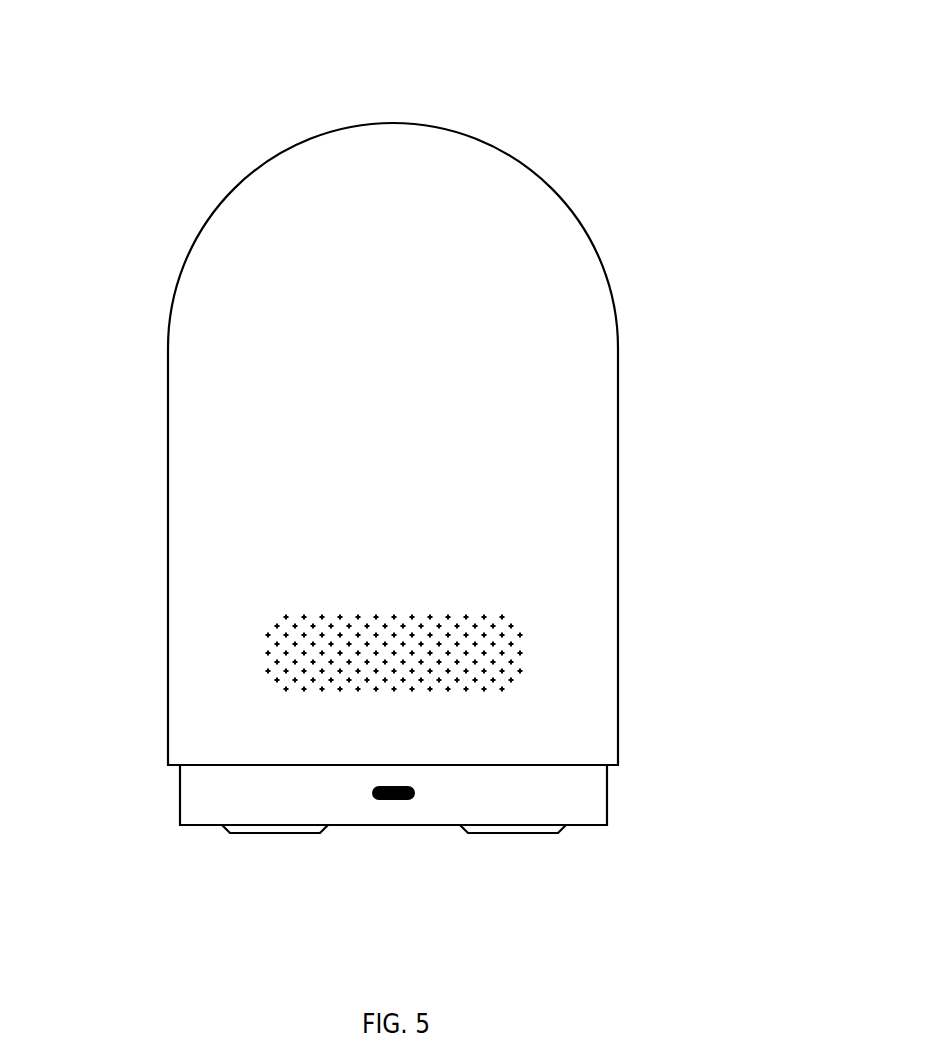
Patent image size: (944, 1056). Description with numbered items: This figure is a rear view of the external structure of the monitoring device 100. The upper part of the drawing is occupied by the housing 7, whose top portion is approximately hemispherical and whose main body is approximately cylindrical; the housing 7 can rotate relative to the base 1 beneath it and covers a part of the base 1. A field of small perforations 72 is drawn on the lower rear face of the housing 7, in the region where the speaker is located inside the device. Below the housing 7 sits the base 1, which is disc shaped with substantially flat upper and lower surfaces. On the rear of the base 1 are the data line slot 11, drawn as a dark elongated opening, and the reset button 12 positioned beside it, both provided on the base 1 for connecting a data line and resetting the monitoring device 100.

The monitoring device 100 is at (397, 474).
The housing 7 is at (587, 617).
The air outlet holes 72 is at (272, 667).
The base 1 is at (449, 820).
The data line slot 11 is at (395, 800).
The reset button 12 is at (447, 789).